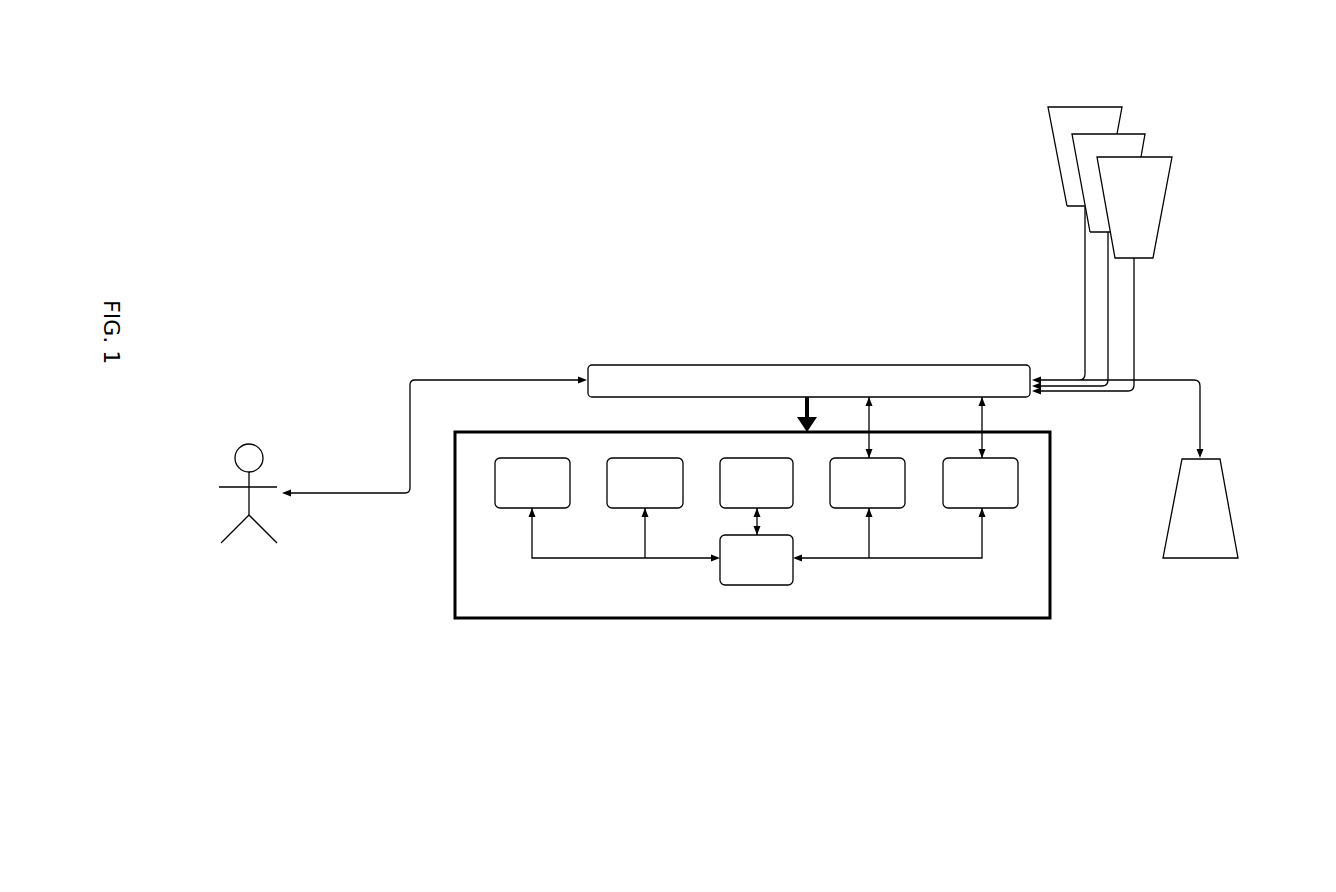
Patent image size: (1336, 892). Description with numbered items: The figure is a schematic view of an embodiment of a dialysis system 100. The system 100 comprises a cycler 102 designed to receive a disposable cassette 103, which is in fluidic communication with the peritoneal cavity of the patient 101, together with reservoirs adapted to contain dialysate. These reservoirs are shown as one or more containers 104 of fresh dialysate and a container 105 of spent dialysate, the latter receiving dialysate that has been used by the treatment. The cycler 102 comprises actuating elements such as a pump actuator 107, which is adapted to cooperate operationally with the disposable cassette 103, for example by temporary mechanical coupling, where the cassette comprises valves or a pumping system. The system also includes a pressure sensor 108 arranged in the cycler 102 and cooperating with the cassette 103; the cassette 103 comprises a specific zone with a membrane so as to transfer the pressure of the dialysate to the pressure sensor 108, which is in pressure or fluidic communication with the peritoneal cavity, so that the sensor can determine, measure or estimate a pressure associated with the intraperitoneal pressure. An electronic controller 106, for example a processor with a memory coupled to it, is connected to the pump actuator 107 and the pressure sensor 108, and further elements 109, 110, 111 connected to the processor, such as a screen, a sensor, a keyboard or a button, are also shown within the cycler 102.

The system 100 is at (468, 158).
The patient 101 is at (284, 526).
The cycler 102 is at (448, 585).
The cassette 103 is at (748, 360).
The container 104 is at (1143, 153).
The container 105 is at (1232, 503).
The controller 106 is at (756, 560).
The pump actuator 107 is at (980, 483).
The pressure sensor 108 is at (867, 483).
The other element connected to the processor 109 is at (756, 483).
The other element connected to the processor 110 is at (645, 483).
The other element connected to the processor 111 is at (532, 483).